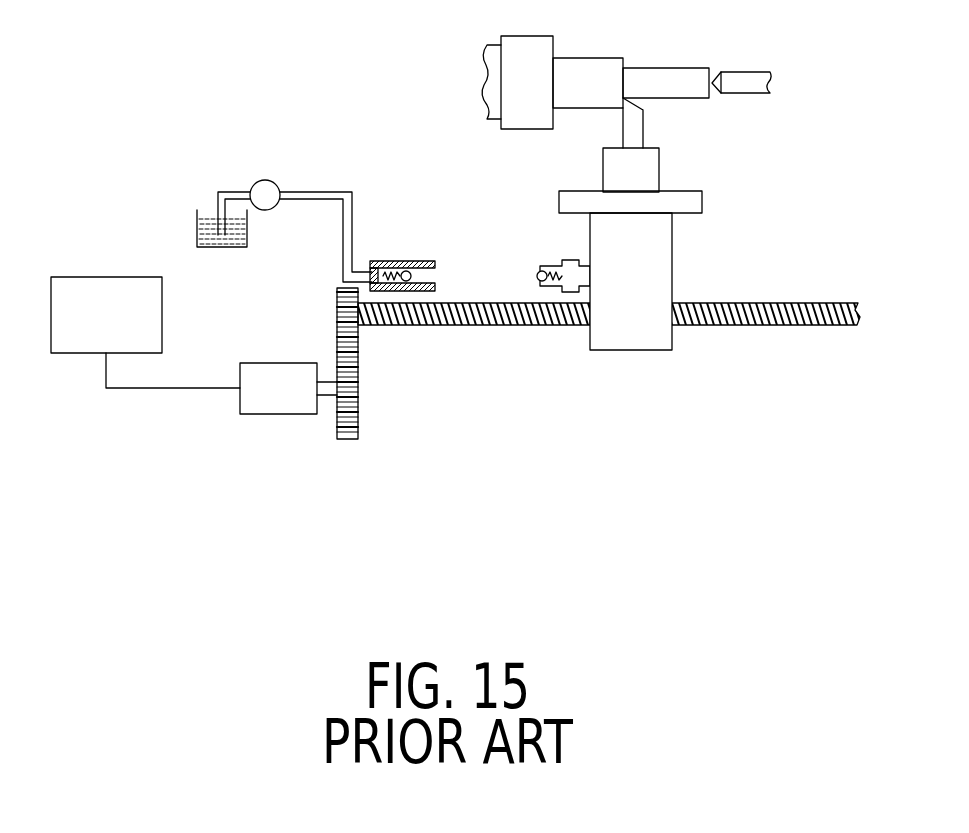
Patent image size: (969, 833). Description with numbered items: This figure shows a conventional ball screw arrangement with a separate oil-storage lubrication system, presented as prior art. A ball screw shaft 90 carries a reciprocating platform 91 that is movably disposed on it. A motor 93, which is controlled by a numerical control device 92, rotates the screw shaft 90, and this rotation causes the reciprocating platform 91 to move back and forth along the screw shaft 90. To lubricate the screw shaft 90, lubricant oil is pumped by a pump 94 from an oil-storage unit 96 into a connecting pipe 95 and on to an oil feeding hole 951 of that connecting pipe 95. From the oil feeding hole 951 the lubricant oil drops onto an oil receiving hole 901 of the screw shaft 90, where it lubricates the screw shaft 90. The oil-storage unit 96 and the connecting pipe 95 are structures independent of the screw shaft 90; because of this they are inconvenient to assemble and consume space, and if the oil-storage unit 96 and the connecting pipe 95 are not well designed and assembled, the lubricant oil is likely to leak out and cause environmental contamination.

The ball screw shaft 90 is at (495, 318).
The oil receiving hole 901 is at (544, 268).
The reciprocating platform 91 is at (657, 271).
The numerical control device 92 is at (119, 293).
The motor 93 is at (260, 399).
The pump 94 is at (268, 180).
The connecting pipe 95 is at (315, 197).
The oil feeding hole 951 is at (420, 275).
The oil-storage unit 96 is at (242, 232).